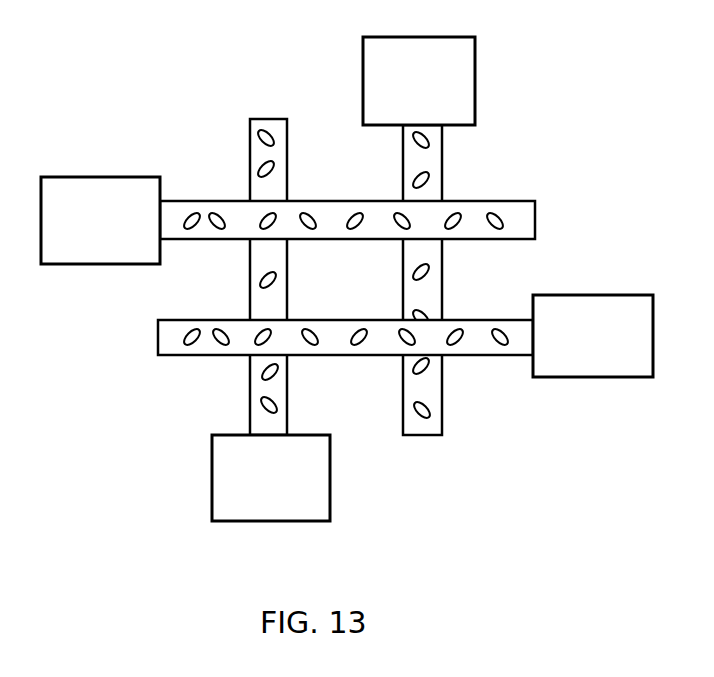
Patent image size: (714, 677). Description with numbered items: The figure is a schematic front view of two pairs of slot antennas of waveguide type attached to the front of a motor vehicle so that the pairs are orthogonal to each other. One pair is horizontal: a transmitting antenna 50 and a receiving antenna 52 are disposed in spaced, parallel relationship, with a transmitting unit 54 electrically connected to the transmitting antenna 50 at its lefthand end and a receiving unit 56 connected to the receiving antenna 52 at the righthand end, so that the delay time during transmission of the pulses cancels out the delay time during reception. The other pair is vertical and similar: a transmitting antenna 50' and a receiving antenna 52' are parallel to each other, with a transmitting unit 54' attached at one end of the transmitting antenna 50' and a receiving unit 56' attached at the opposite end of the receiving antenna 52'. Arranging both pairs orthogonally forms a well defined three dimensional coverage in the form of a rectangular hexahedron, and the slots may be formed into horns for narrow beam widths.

The transmitting antenna 50 is at (347, 195).
The transmitting antenna 50' is at (242, 277).
The receiving antenna 52 is at (345, 318).
The receiving antenna 52' is at (450, 282).
The transmitting unit 54 is at (100, 195).
The transmitting unit 54' is at (243, 478).
The receiving unit 56 is at (593, 310).
The receiving unit 56' is at (419, 62).